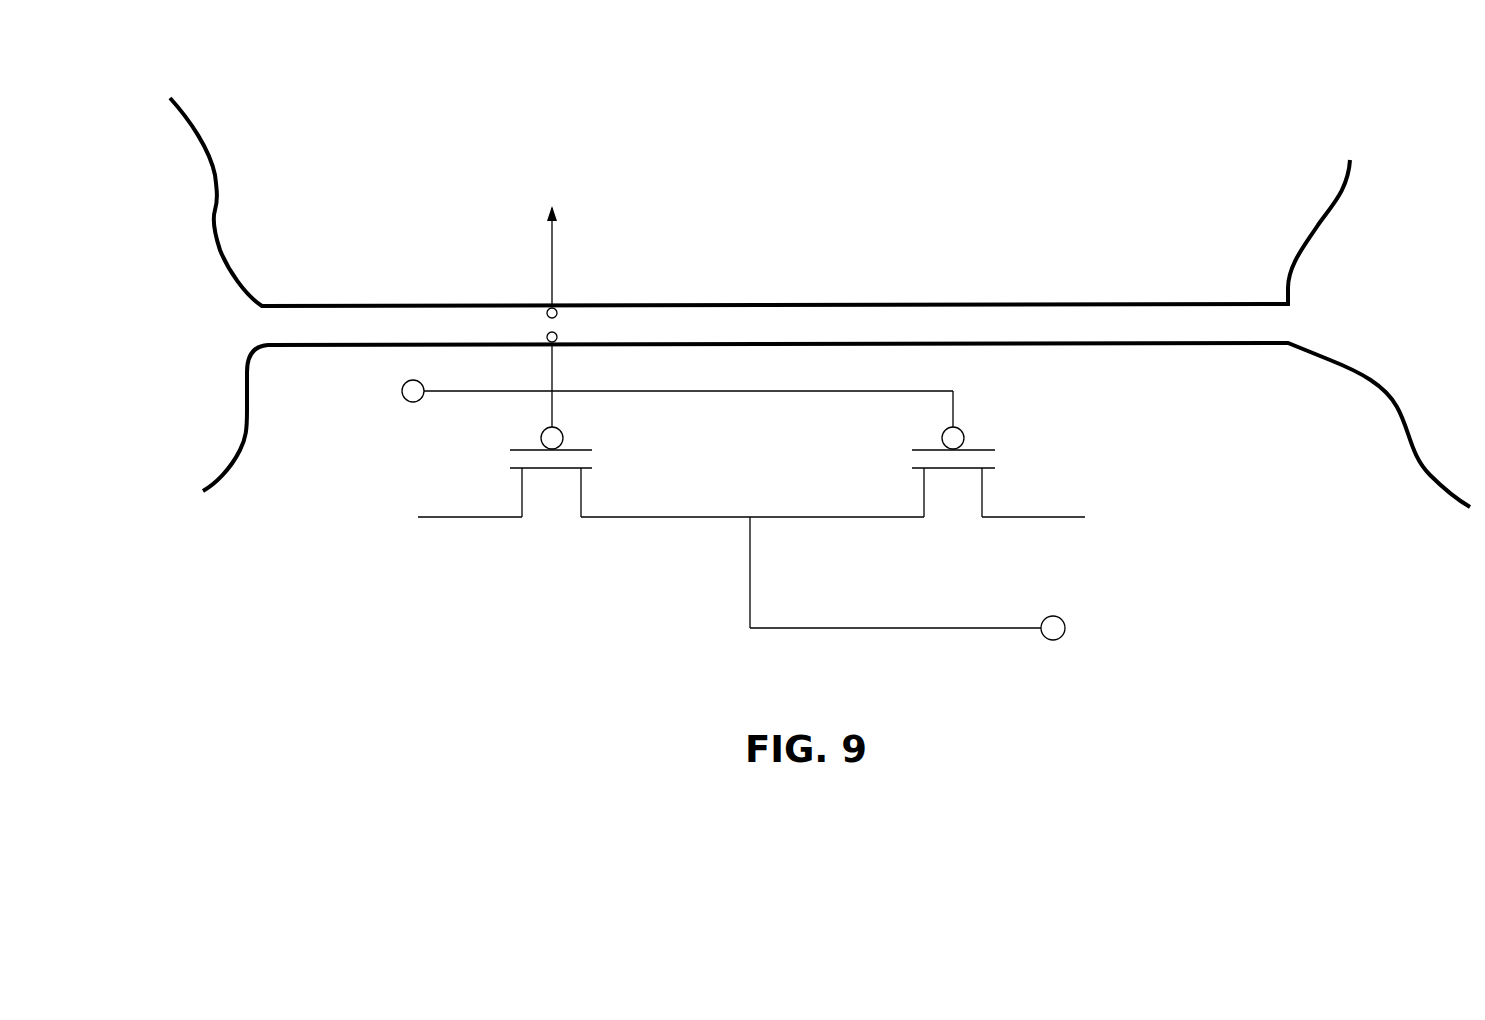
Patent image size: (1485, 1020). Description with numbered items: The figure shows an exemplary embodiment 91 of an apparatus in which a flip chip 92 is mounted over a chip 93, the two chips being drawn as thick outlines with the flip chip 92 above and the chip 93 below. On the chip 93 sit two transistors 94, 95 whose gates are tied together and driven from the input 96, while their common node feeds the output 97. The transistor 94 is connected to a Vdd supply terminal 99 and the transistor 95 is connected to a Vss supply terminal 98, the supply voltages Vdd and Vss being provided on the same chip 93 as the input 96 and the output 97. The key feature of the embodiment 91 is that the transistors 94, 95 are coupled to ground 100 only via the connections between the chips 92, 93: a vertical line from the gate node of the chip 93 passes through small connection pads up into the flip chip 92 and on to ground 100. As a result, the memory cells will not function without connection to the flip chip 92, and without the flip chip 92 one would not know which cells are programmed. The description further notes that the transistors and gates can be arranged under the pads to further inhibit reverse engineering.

The embodiment 91 is at (820, 286).
The flip chip 92 is at (1294, 219).
The chip 93 is at (1365, 430).
The transistor 94 is at (549, 512).
The transistor 95 is at (946, 512).
The input 96 is at (414, 402).
The output 97 is at (1055, 641).
The Vss terminal 98 is at (1153, 525).
The Vdd terminal 99 is at (370, 540).
The ground 100 is at (551, 284).